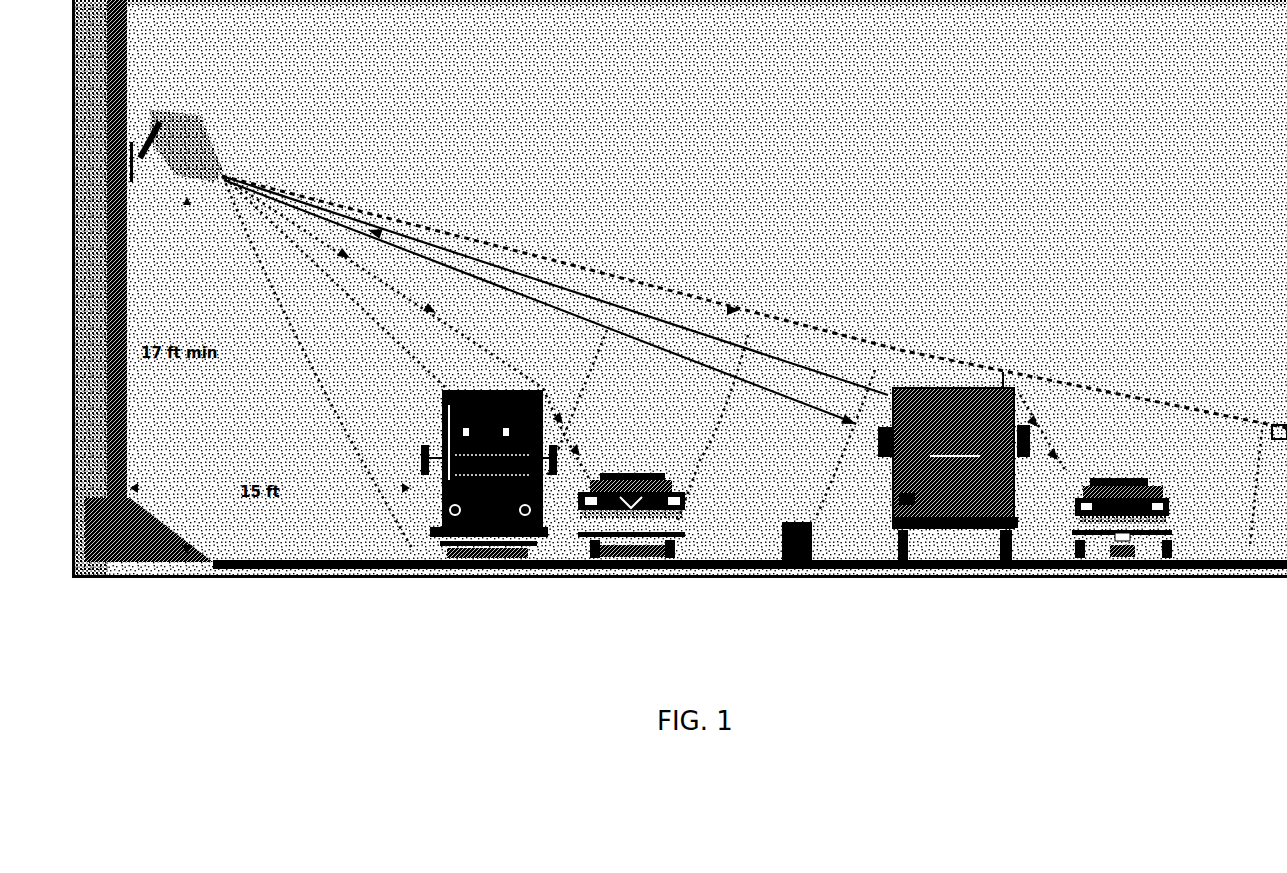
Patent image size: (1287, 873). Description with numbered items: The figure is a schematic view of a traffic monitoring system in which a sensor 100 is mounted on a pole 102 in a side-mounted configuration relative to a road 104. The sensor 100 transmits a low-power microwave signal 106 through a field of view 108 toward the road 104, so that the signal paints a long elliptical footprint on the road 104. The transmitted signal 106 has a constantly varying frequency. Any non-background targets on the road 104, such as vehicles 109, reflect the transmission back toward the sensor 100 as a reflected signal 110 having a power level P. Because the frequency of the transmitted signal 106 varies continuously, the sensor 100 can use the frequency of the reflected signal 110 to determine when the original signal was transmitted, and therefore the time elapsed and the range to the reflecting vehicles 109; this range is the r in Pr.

The sensor 100 is at (187, 127).
The pole 102 is at (127, 33).
The road 104 is at (1202, 573).
The signal 106 is at (540, 305).
The field of view 108 is at (721, 415).
The vehicles 109 is at (615, 537).
The reflected signal 110 is at (555, 285).